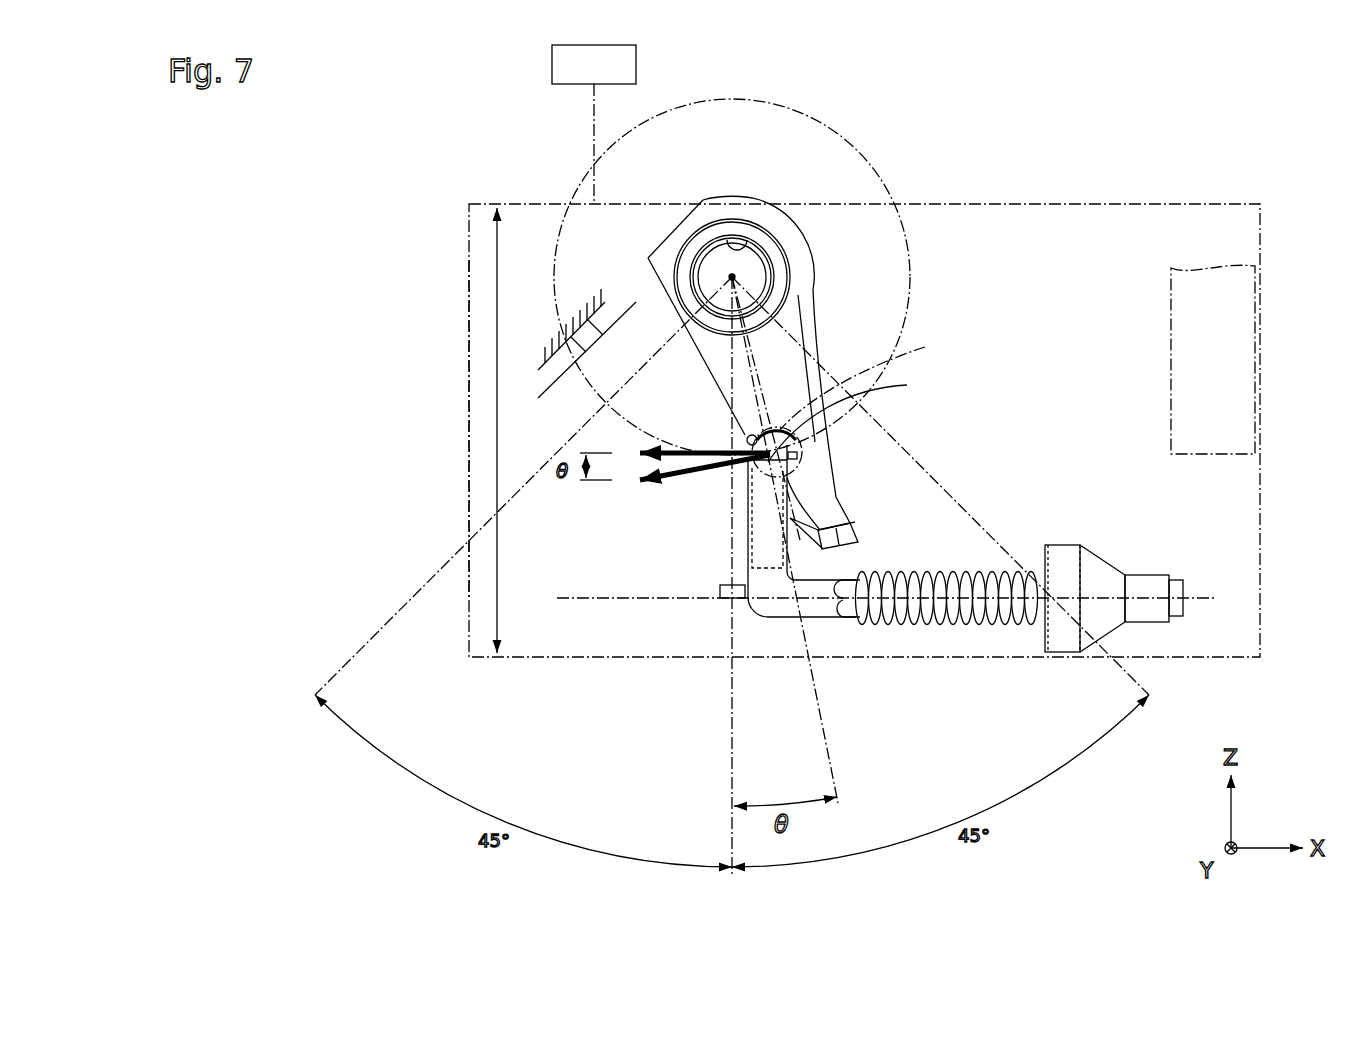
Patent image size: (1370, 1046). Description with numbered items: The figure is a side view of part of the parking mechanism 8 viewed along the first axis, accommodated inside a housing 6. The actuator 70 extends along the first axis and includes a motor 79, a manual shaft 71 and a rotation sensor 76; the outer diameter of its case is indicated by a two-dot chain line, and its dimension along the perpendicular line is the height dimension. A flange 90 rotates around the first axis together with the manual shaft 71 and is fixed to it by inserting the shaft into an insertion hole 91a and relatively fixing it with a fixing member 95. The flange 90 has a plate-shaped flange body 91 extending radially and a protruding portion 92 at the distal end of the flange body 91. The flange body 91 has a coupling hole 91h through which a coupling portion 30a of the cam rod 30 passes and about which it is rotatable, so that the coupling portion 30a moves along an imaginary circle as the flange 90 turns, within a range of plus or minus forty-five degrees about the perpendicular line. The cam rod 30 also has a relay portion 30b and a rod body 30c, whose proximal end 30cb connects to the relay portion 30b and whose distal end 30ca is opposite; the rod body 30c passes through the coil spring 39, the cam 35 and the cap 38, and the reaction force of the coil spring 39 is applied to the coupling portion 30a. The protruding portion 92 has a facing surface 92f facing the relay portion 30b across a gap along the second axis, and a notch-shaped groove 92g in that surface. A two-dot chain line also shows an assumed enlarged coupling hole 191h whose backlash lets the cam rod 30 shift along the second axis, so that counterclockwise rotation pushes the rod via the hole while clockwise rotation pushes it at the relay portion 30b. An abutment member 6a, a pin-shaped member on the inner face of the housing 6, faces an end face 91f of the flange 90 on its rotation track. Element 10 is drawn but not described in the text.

The housing 6 is at (572, 330).
The abutment member 6a is at (590, 358).
The parking mechanism 8 is at (1148, 138).
The base 10 is at (1256, 352).
The cam rod 30 is at (772, 570).
The coupling portion 30a is at (746, 460).
The relay portion 30b is at (765, 545).
The rod body 30c is at (822, 618).
The distal end 30ca is at (1177, 590).
The proximal end 30cb is at (770, 620).
The cam 35 is at (1062, 545).
The cap 38 is at (1145, 590).
The coil spring 39 is at (960, 612).
The actuator 70 is at (462, 210).
The manual shaft 71 is at (755, 270).
The rotation sensor 76 is at (640, 62).
The motor 79 is at (467, 292).
The flange 90 is at (802, 225).
The flange body 91 is at (800, 330).
The insertion hole 91a is at (753, 240).
The end face 91f is at (677, 378).
The coupling hole 91h is at (880, 392).
The coupling hole 191h is at (903, 360).
The protruding portion 92 is at (840, 542).
The facing surface 92f is at (792, 518).
The groove 92g is at (848, 535).
The fixing member 95 is at (730, 232).